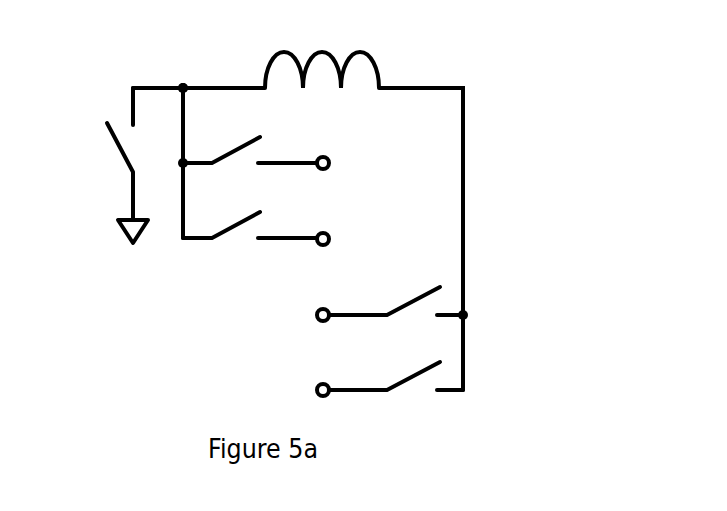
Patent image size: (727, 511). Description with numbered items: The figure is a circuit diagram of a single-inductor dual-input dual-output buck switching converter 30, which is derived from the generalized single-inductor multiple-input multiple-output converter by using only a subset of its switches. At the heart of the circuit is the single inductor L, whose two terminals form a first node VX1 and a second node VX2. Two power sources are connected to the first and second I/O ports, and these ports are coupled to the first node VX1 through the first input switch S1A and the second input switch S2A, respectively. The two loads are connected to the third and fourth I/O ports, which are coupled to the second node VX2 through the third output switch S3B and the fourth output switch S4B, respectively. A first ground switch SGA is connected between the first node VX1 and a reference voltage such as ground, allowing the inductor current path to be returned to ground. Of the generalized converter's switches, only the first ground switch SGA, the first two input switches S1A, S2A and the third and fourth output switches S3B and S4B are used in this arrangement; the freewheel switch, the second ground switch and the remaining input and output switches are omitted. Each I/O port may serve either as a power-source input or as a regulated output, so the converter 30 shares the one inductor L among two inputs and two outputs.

The single-inductor DIDO buck switching converter 30 is at (349, 206).
The inductor L is at (322, 52).
The first node VX1 is at (182, 75).
The second node VX2 is at (440, 83).
The first ground switch SGA is at (104, 165).
The first input switch S1A is at (260, 143).
The second input switch S2A is at (260, 218).
The third output switch S3B is at (380, 294).
The fourth output switch S4B is at (380, 369).